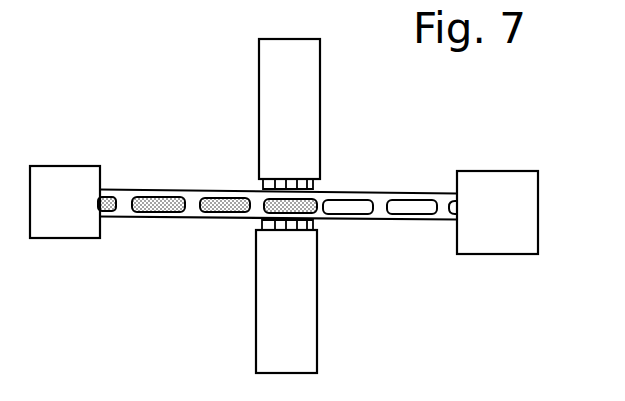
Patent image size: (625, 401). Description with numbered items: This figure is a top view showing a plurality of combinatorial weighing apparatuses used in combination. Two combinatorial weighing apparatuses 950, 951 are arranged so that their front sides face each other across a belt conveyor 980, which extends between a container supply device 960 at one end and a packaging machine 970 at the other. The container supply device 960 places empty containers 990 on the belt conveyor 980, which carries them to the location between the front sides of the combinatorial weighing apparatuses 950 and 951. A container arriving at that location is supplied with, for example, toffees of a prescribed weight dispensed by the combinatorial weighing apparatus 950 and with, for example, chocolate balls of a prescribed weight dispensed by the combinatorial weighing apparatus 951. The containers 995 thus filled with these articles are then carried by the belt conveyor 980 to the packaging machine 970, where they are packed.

The combinatorial weighing apparatus 950 is at (319, 85).
The combinatorial weighing apparatus 951 is at (317, 291).
The container supply device 960 is at (533, 197).
The packaging machine 970 is at (75, 172).
The belt conveyor 980 is at (190, 213).
The empty containers 990 is at (415, 206).
The filled containers 995 is at (115, 198).